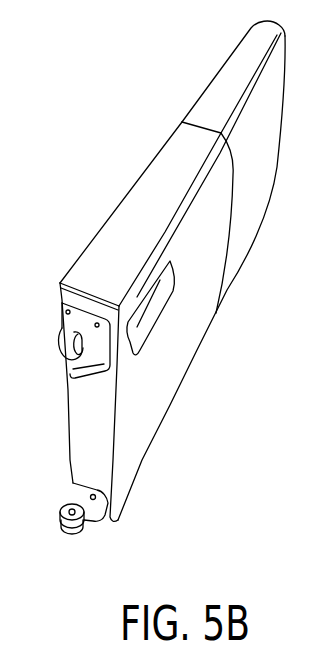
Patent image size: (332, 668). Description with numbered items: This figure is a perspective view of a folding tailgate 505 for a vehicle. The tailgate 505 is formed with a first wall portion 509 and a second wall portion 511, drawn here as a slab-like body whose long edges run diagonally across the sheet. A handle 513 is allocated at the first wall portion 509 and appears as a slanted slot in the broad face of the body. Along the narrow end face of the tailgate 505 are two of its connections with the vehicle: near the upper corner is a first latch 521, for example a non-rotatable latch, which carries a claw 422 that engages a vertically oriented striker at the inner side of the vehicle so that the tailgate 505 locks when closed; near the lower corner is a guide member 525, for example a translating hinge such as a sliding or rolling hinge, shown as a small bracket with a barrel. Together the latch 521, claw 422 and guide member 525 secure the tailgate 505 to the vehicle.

The folding tailgate 505 is at (105, 115).
The first wall portion 509 is at (118, 204).
The second wall portion 511 is at (222, 62).
The handle 513 is at (173, 292).
The claw 422 is at (72, 333).
The first latch 521 is at (73, 358).
The guide member 525 is at (73, 541).